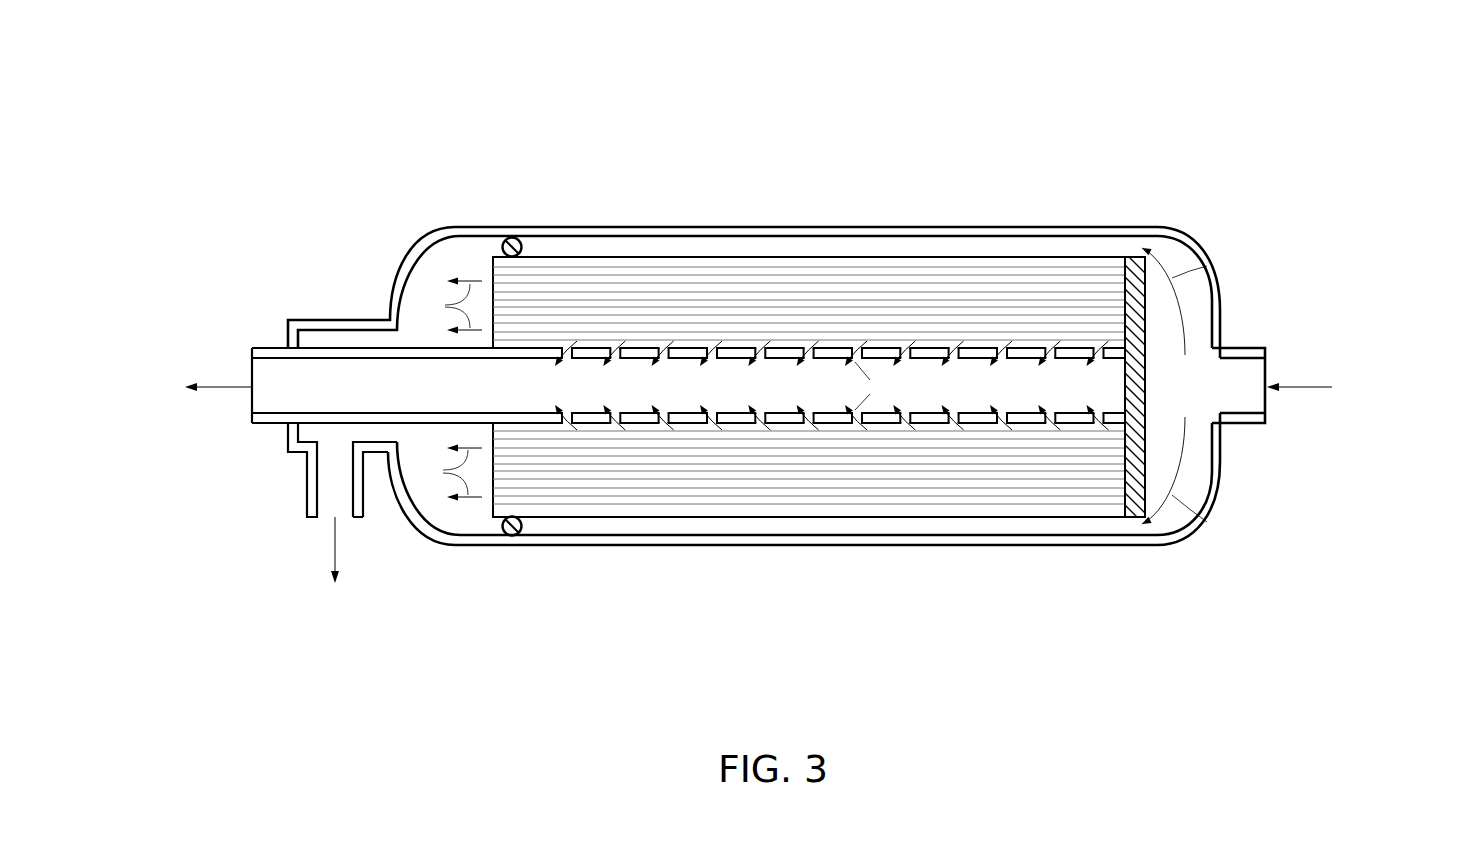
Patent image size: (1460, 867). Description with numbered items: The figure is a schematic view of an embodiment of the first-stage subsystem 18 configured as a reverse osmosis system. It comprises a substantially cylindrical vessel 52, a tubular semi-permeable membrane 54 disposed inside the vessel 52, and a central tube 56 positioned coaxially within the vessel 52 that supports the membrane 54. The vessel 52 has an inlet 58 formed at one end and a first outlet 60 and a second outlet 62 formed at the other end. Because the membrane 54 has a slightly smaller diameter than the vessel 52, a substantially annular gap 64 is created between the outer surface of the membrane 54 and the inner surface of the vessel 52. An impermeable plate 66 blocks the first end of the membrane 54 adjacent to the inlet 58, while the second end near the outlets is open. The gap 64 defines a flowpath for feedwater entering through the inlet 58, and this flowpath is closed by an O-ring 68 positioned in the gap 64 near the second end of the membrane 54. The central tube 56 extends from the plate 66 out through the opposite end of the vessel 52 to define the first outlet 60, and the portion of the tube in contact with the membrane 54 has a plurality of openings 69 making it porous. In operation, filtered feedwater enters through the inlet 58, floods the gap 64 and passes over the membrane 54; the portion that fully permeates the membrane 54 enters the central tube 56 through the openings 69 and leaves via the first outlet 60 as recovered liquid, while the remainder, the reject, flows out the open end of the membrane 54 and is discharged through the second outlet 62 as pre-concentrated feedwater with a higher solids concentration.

The first-stage subsystem 18 is at (1185, 185).
The vessel 52 is at (1032, 233).
The semi-permeable membrane 54 is at (873, 288).
The central tube 56 is at (423, 348).
The inlet 58 is at (1267, 358).
The first outlet 60 is at (250, 360).
The second outlet 62 is at (318, 520).
The annular gap 64 is at (710, 247).
The impermeable plate 66 is at (1148, 405).
The O-ring 68 is at (516, 238).
The openings 69 is at (616, 412).